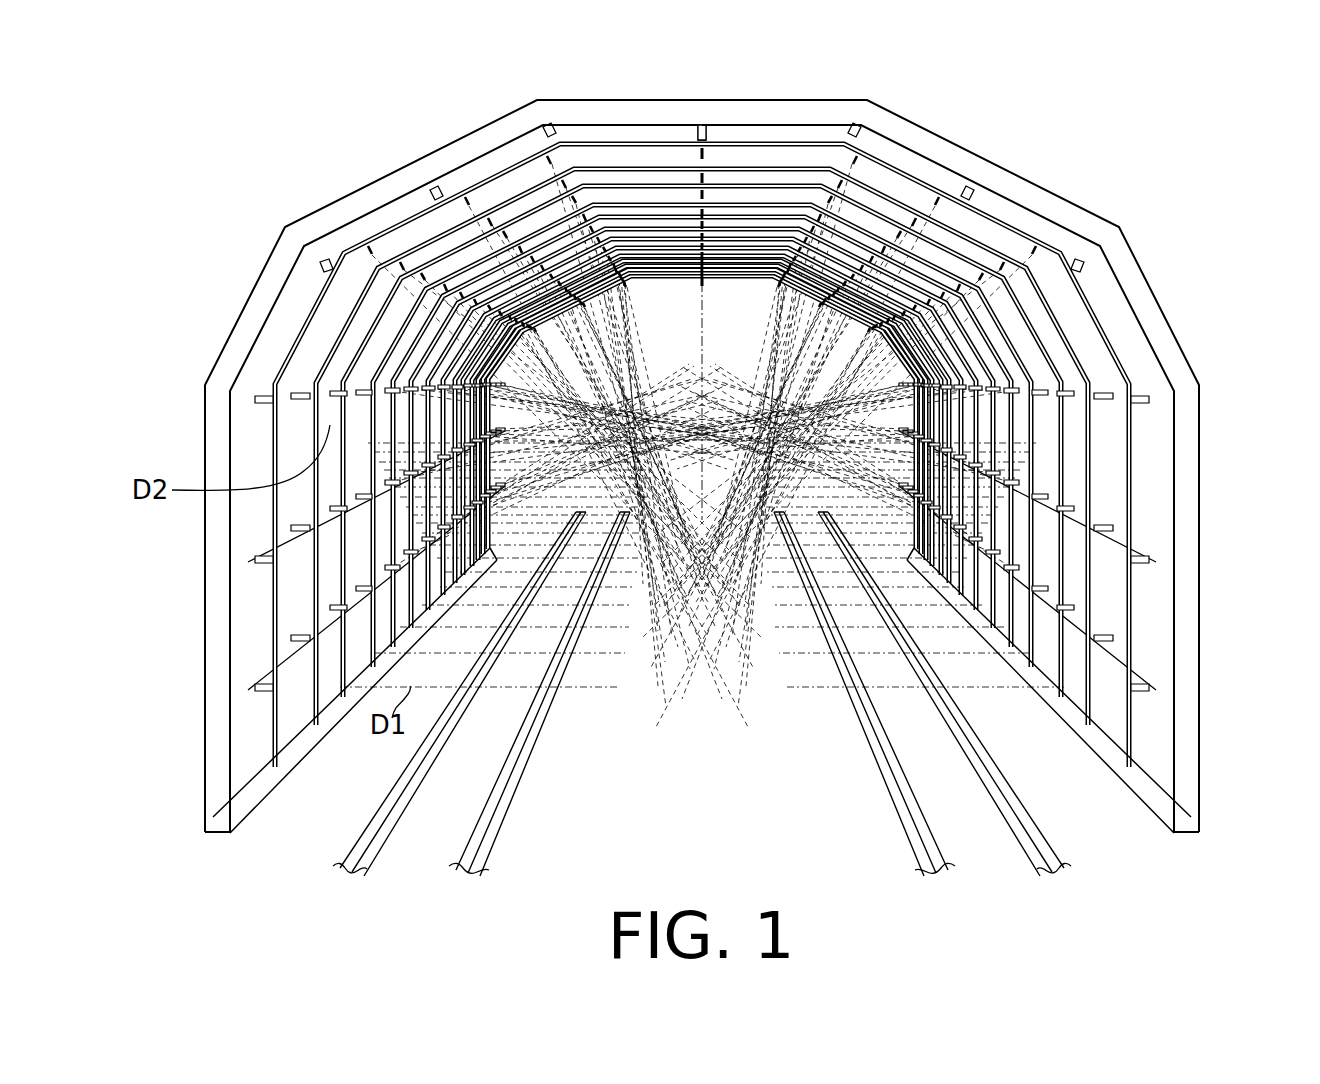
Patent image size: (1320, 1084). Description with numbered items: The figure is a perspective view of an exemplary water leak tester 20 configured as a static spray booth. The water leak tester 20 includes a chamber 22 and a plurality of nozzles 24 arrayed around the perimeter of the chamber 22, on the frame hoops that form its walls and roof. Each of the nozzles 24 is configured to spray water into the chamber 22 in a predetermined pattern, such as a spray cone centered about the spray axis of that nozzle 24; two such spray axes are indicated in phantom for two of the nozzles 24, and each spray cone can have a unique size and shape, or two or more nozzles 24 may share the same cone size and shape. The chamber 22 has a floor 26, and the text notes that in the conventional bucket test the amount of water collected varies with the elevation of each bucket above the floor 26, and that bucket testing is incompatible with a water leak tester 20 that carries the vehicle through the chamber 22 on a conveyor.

The water leak tester 20 is at (702, 457).
The chamber 22 is at (655, 379).
The nozzles 24 is at (545, 138).
The floor 26 is at (697, 713).